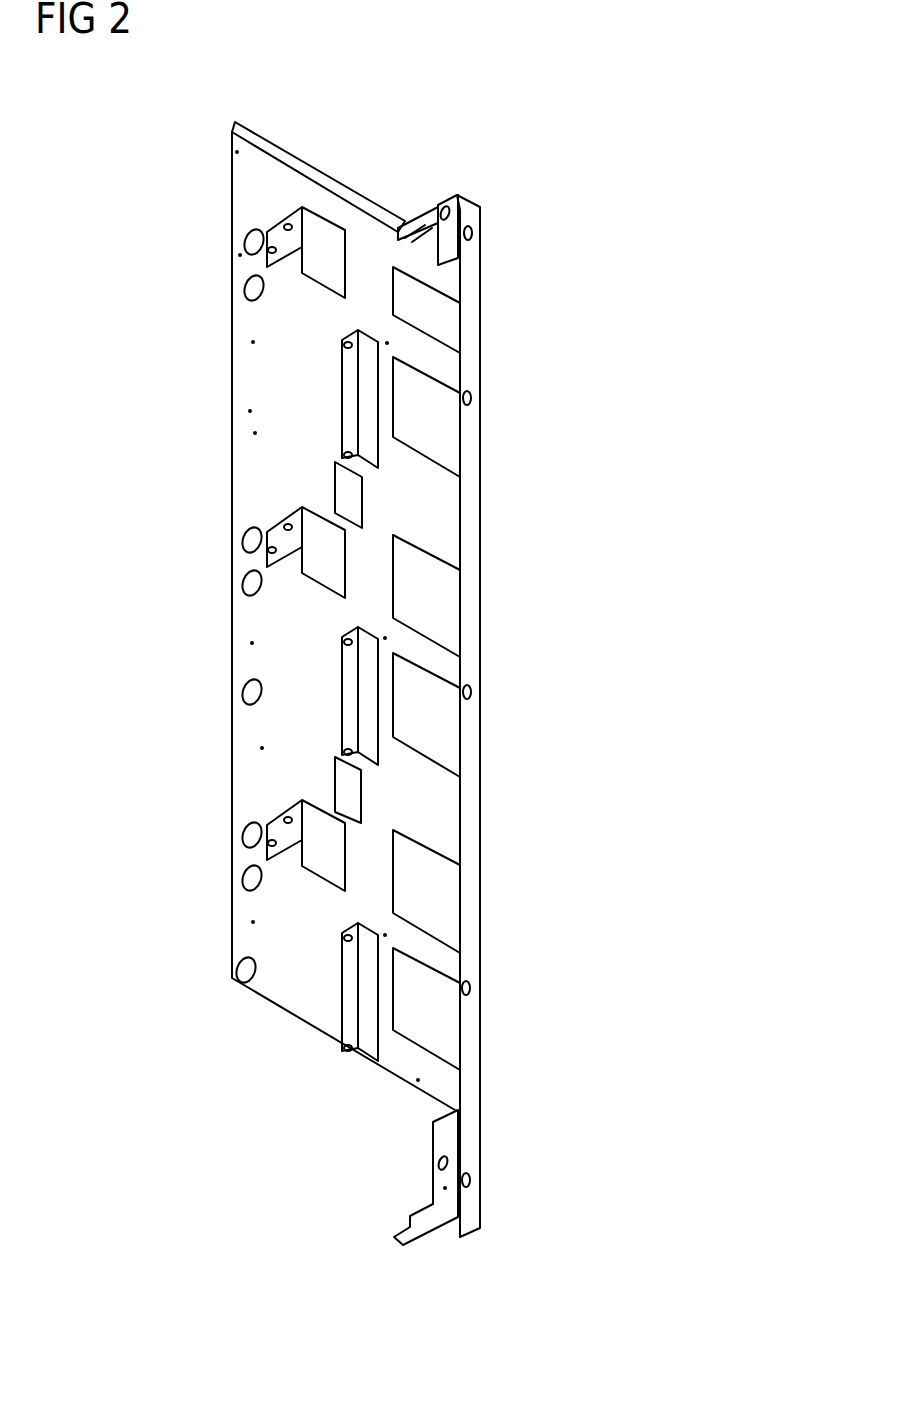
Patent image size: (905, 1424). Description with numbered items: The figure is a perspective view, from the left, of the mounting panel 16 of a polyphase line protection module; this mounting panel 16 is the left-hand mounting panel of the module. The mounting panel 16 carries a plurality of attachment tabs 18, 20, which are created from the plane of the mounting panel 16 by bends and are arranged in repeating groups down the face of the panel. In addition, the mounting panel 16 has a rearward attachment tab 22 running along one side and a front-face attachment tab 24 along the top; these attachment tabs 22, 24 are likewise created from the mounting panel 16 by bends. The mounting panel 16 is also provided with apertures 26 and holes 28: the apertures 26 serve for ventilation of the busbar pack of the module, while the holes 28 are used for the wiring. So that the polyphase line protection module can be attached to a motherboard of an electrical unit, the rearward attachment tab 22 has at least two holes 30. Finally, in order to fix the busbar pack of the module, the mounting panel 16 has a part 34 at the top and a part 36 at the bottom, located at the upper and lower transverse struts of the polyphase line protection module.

The mounting panel 16 is at (403, 1060).
The attachment tab 18 is at (283, 245).
The attachment tab 20 is at (350, 392).
The rearward attachment tab 22 is at (470, 560).
The front-face attachment tab 24 is at (232, 127).
The apertures 26 is at (430, 306).
The holes 28 is at (250, 288).
The holes 30 is at (470, 400).
The part 34 is at (438, 212).
The part 36 is at (425, 1218).